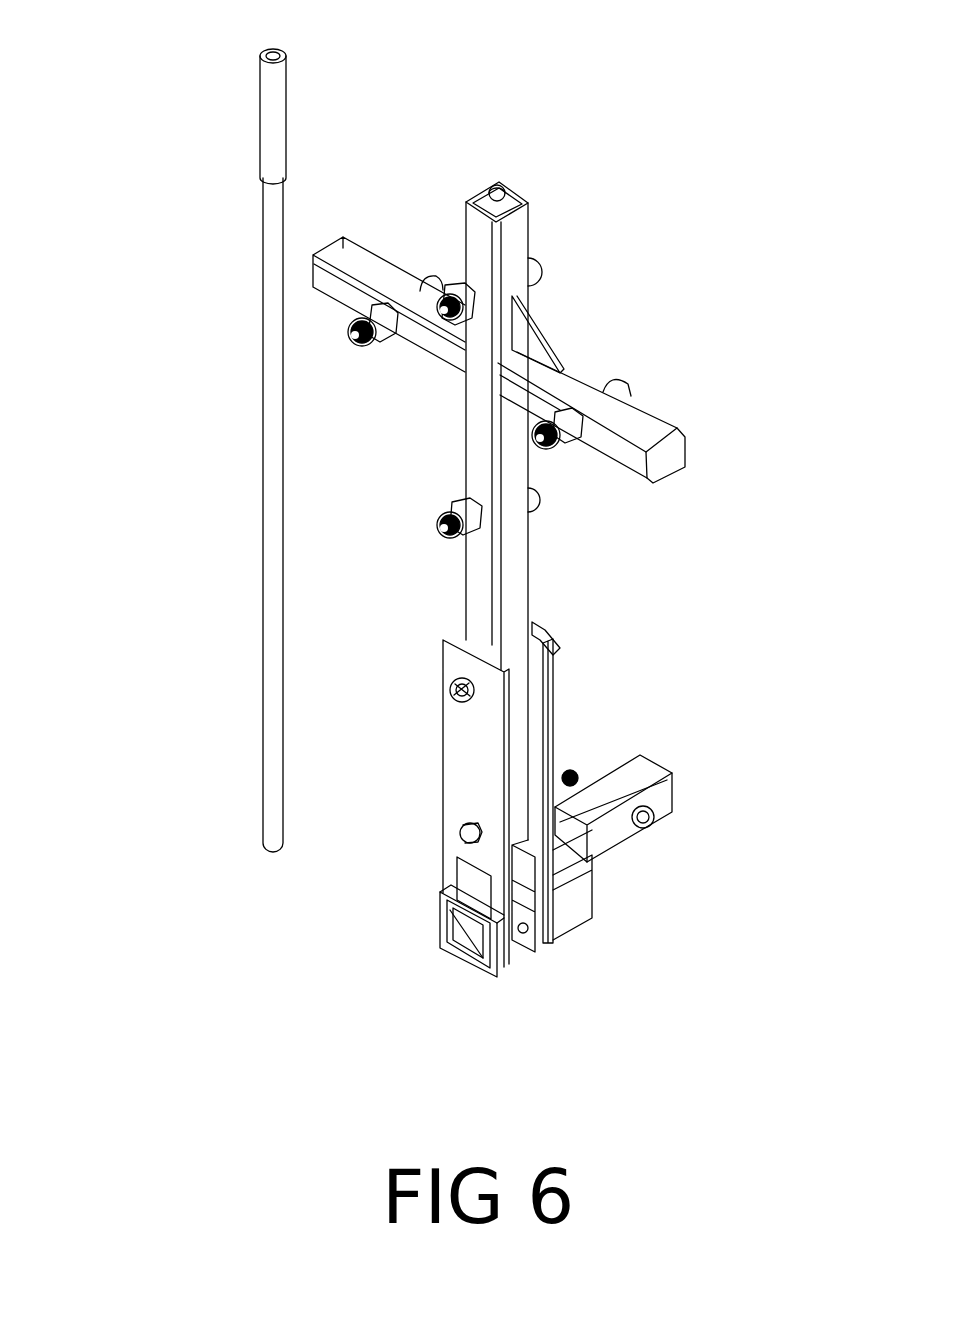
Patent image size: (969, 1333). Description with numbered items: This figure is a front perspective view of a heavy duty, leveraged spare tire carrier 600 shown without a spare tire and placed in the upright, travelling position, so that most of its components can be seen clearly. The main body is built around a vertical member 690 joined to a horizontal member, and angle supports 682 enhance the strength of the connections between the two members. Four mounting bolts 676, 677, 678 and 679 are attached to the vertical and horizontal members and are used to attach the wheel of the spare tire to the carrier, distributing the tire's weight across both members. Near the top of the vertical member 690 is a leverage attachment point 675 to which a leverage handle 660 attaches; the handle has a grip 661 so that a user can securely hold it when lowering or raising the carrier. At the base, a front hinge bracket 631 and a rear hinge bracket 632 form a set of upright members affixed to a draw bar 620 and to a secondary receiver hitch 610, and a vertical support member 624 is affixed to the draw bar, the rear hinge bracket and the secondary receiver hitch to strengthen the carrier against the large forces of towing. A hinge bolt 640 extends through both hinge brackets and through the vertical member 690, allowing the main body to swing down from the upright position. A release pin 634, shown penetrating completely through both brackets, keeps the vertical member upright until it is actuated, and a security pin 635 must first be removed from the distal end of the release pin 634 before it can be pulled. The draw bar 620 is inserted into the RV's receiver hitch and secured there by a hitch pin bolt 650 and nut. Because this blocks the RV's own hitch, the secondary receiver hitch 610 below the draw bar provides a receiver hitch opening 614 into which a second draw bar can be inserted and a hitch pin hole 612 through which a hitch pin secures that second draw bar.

The heavy duty, leveraged spare tire carrier 600 is at (283, 1095).
The secondary receiver hitch 610 is at (567, 905).
The hitch pin hole 612 is at (523, 933).
The receiver hitch opening 614 is at (420, 937).
The draw bar 620 is at (647, 765).
The vertical support member 624 is at (570, 855).
The front hinge bracket 631 is at (457, 778).
The rear hinge bracket 632 is at (550, 738).
The release pin 634 is at (560, 650).
The security pin 635 is at (455, 690).
The hinge bolt 640 is at (470, 840).
The hitch pin bolt 650 is at (650, 823).
The leverage handle 660 is at (262, 252).
The grip 661 is at (266, 78).
The leverage attachment point 675 is at (500, 186).
The mounting bolt 676 is at (428, 278).
The mounting bolt 677 is at (540, 278).
The mounting bolt 678 is at (615, 388).
The mounting bolt 679 is at (545, 497).
The angle support 682 is at (545, 336).
The vertical member 690 is at (521, 228).